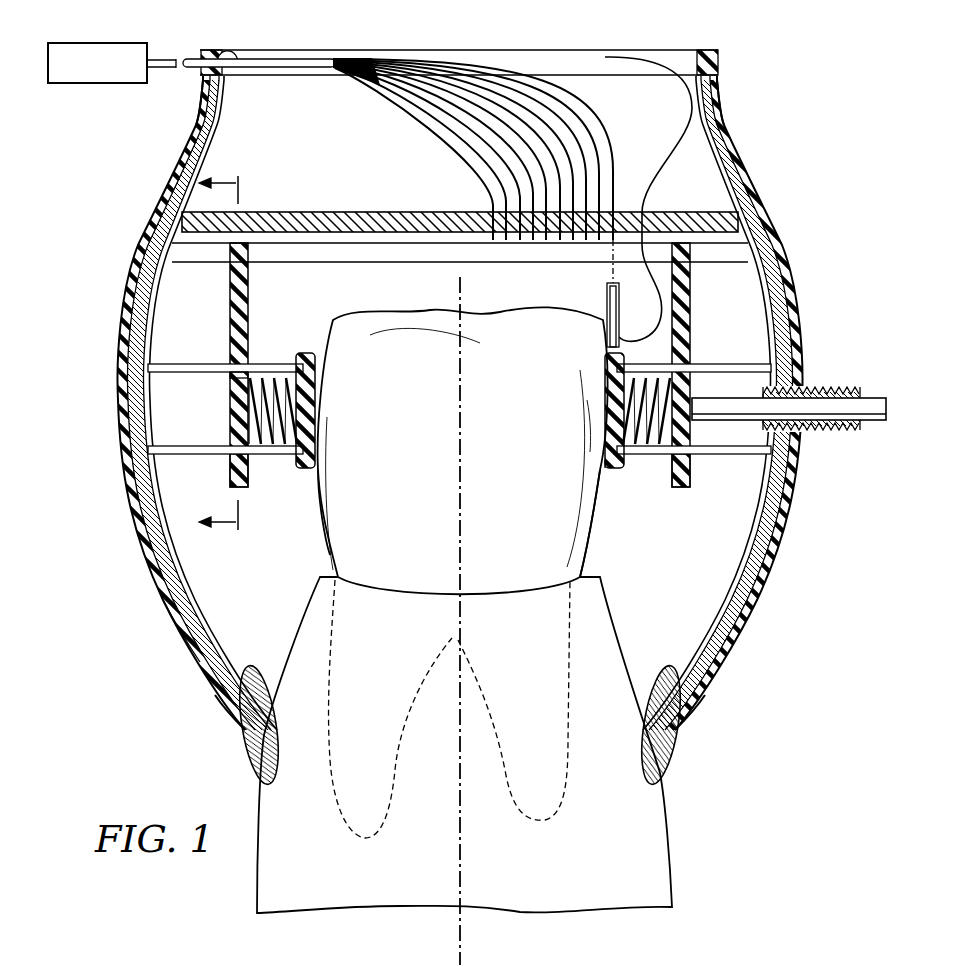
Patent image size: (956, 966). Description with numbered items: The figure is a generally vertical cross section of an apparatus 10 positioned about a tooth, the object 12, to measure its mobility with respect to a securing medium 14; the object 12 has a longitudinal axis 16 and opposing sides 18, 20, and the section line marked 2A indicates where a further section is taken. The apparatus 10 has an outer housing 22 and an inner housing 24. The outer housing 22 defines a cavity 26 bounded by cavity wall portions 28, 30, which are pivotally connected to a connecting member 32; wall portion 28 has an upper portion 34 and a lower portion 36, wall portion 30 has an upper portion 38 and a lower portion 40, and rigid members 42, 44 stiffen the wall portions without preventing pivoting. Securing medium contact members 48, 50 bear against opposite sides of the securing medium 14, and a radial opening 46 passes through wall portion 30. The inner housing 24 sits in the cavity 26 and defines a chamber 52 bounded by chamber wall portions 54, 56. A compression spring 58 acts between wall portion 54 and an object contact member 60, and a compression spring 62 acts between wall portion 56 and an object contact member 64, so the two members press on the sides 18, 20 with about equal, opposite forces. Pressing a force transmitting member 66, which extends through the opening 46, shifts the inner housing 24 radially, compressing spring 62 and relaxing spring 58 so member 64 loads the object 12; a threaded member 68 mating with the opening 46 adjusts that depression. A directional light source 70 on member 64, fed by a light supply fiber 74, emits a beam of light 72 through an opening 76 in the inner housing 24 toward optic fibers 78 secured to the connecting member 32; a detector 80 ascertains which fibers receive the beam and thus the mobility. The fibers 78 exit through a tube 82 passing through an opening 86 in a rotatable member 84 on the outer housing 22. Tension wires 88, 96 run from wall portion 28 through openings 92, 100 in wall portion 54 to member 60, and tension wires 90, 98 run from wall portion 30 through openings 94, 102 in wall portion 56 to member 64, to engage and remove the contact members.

The apparatus 10 is at (800, 158).
The object 12 is at (525, 482).
The securing medium 14 is at (618, 866).
The longitudinal axis 16 is at (462, 946).
The opposing side 18 is at (322, 512).
The opposing side 20 is at (598, 538).
The outer housing 22 is at (138, 245).
The inner housing 24 is at (230, 290).
The cavity 26 is at (222, 647).
The cavity wall portion 28 is at (166, 600).
The cavity wall portion 30 is at (776, 570).
The connecting member 32 is at (313, 212).
The upper portion 34 is at (190, 110).
The lower portion 36 is at (213, 702).
The upper portion 38 is at (738, 131).
The lower portion 40 is at (707, 702).
The rigid member 42 is at (186, 612).
The rigid member 44 is at (740, 625).
The opening 46 is at (803, 432).
The securing medium contact member 48 is at (238, 752).
The securing medium contact member 50 is at (685, 763).
The chamber 52 is at (266, 321).
The chamber wall portion 54 is at (232, 398).
The chamber wall portion 56 is at (695, 440).
The compression spring 58 is at (252, 426).
The object contact member 60 is at (298, 468).
The compression spring 62 is at (622, 458).
The object contact member 64 is at (611, 470).
The force transmitting member 66 is at (882, 397).
The threaded member 68 is at (862, 430).
The directional light source 70 is at (607, 290).
The beam of light 72 is at (610, 258).
The light supply fiber 74 is at (662, 170).
The opening 76 is at (343, 260).
The optic fibers 78 is at (580, 120).
The detector 80 is at (82, 85).
The tube 82 is at (199, 50).
The rotatable member 84 is at (722, 62).
The opening 86 is at (231, 50).
The tension wire 88 is at (190, 365).
The tension wire 90 is at (758, 365).
The opening 92 is at (230, 378).
The opening 94 is at (692, 366).
The tension wire 96 is at (188, 455).
The tension wire 98 is at (728, 455).
The opening 100 is at (230, 456).
The opening 102 is at (660, 465).
The section line 2A is at (226, 355).